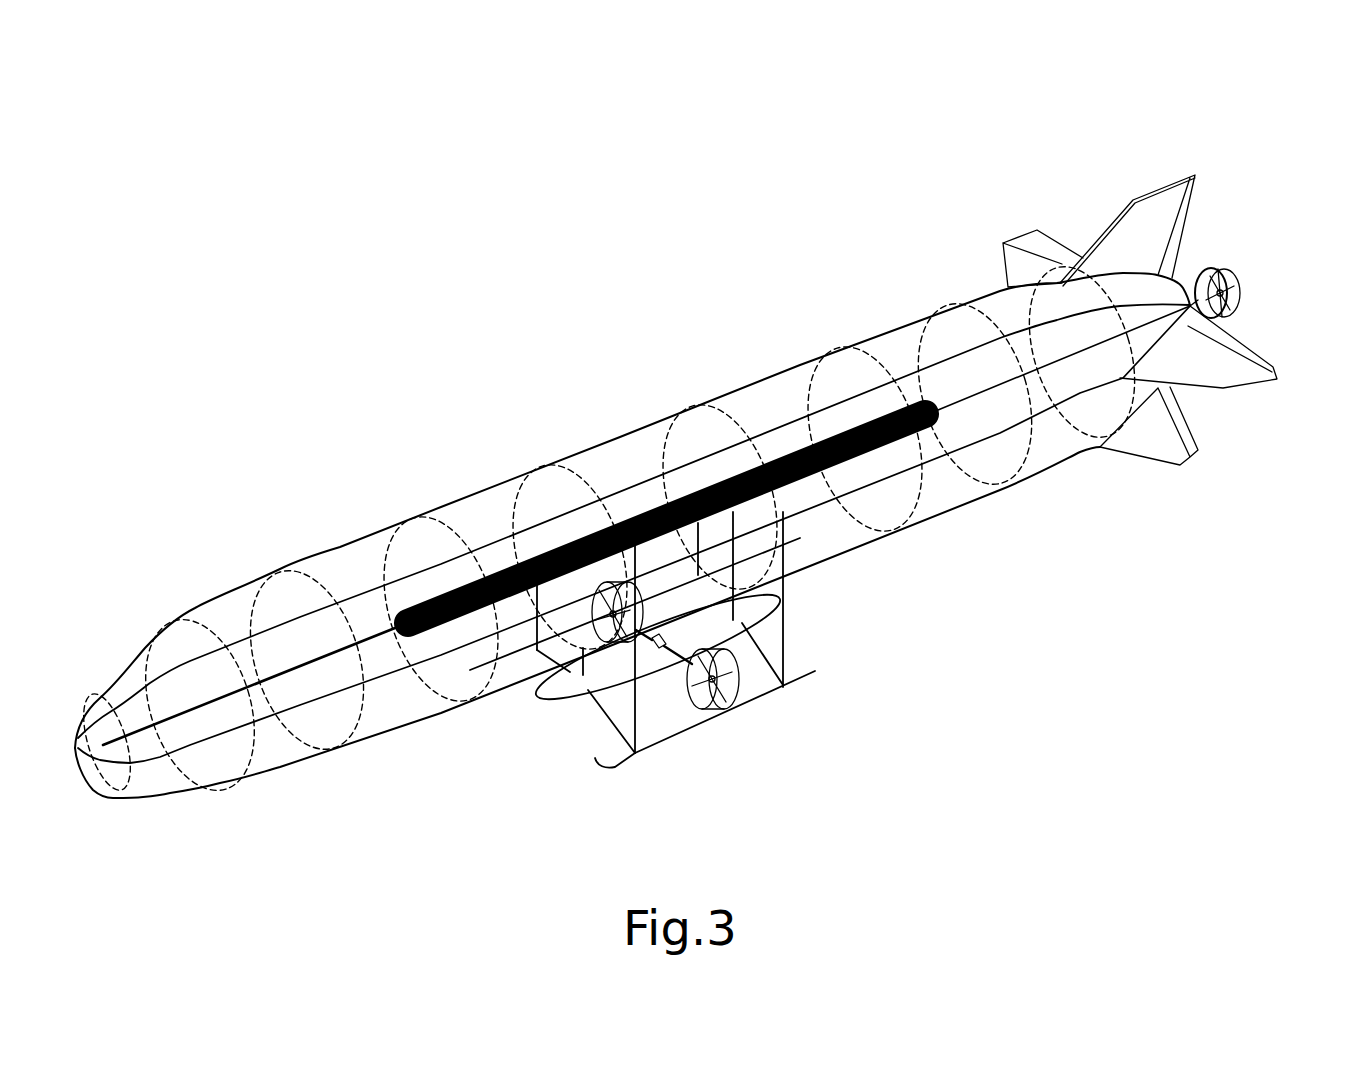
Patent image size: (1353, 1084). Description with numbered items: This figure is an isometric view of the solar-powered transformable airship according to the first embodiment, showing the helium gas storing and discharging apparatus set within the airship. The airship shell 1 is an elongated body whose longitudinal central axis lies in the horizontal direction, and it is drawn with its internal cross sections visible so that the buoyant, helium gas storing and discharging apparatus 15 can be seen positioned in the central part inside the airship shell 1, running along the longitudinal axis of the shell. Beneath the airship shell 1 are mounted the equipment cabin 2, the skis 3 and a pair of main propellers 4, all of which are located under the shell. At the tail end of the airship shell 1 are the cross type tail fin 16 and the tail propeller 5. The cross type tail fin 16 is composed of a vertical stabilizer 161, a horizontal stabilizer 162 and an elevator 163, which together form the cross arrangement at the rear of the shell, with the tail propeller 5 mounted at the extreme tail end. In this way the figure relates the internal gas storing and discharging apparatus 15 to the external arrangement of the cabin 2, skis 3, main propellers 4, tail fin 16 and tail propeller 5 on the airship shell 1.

The airship shell 1 is at (175, 798).
The equipment cabin 2 is at (553, 700).
The skis 3 is at (812, 666).
The main propellers 4 is at (723, 707).
The tail propeller 5 is at (1236, 273).
The helium gas storing and discharging apparatus 15 is at (528, 560).
The cross type tail fin 16 is at (1153, 172).
The vertical stabilizer 161 is at (1127, 242).
The horizontal stabilizer 162 is at (1223, 384).
The elevator 163 is at (1260, 348).